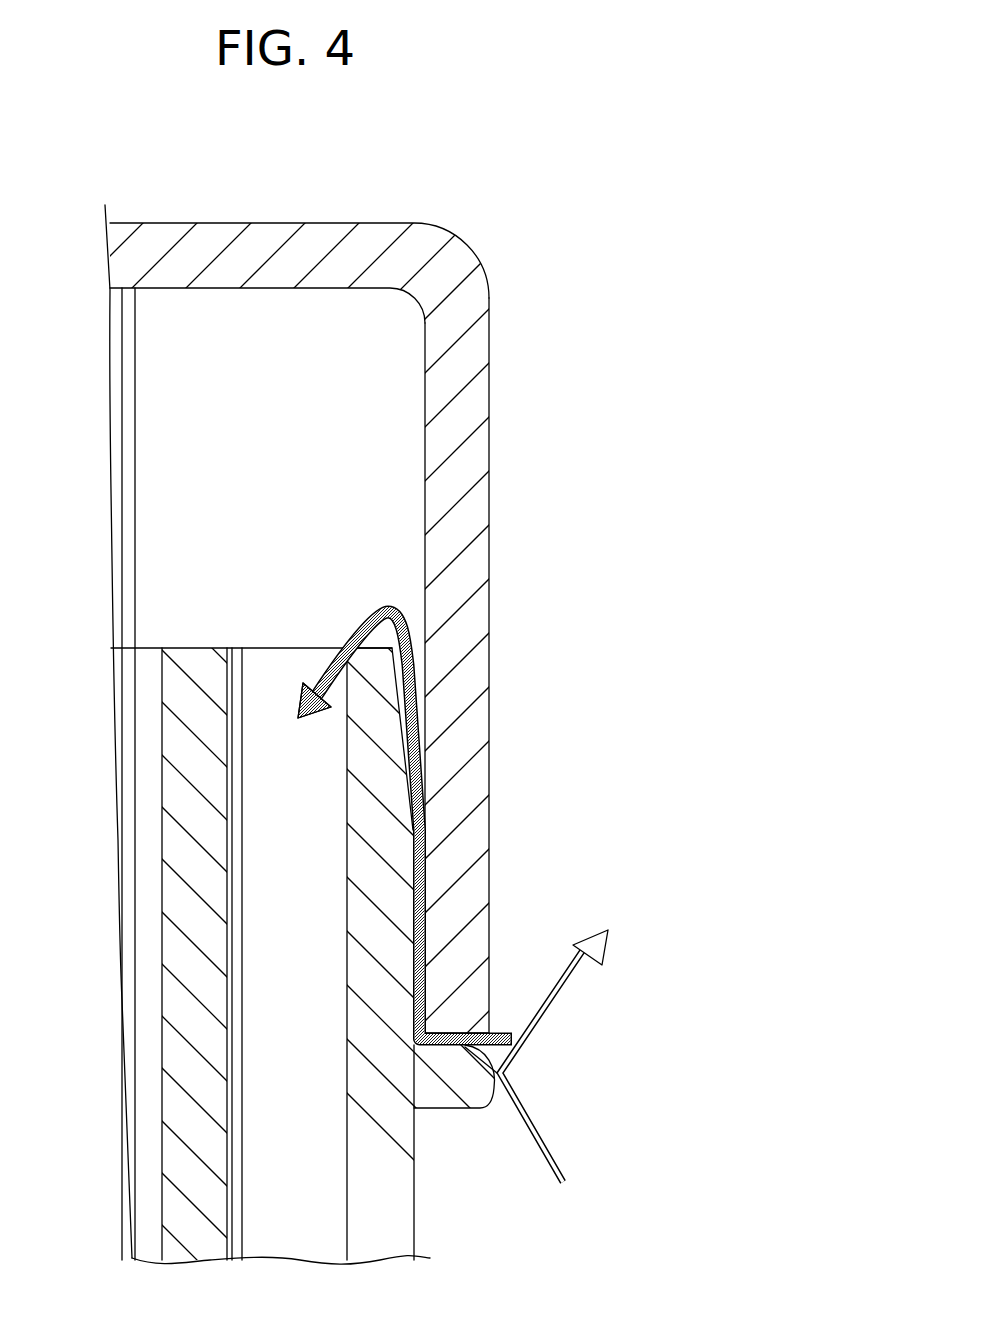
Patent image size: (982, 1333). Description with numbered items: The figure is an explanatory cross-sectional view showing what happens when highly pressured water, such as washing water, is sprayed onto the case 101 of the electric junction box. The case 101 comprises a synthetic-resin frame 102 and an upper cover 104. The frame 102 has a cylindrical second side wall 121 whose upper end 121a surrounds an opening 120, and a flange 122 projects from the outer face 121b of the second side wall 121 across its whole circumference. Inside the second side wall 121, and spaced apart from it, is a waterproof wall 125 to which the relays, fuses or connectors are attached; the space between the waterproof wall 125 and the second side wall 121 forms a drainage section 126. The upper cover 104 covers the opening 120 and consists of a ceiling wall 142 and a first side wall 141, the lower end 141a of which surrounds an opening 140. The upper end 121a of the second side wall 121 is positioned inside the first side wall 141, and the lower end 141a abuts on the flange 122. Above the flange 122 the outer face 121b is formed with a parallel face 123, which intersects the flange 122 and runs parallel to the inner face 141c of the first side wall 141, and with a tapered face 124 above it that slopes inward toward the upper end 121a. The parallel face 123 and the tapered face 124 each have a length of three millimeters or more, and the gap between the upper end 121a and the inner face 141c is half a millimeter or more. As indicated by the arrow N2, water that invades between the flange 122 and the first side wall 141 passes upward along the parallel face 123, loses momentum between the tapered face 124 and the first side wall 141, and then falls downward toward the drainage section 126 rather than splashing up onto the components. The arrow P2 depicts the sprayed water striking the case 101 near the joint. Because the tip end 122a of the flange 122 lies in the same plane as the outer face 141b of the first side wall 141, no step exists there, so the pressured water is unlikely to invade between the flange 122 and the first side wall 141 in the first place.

The case 101 is at (610, 145).
The frame 102 is at (426, 1221).
The upper cover 104 is at (491, 595).
The opening 120 is at (243, 660).
The second side wall 121 is at (487, 879).
The upper end of the second side wall 121a is at (357, 627).
The outer face of the second side wall 121b is at (424, 868).
The flange 122 is at (482, 1105).
The tip end of the flange 122a is at (497, 1073).
The parallel face 123 is at (428, 938).
The tapered face 124 is at (396, 740).
The waterproof wall 125 is at (185, 945).
The drainage section 126 is at (240, 1108).
The opening 140 is at (420, 1047).
The first side wall 141 is at (457, 665).
The lower end of the first side wall 141a is at (507, 1033).
The outer face of the first side wall 141b is at (489, 540).
The inner face of the first side wall 141c is at (425, 427).
The ceiling wall 142 is at (238, 247).
The arrow N2 is at (422, 760).
The path direction P2 is at (570, 992).